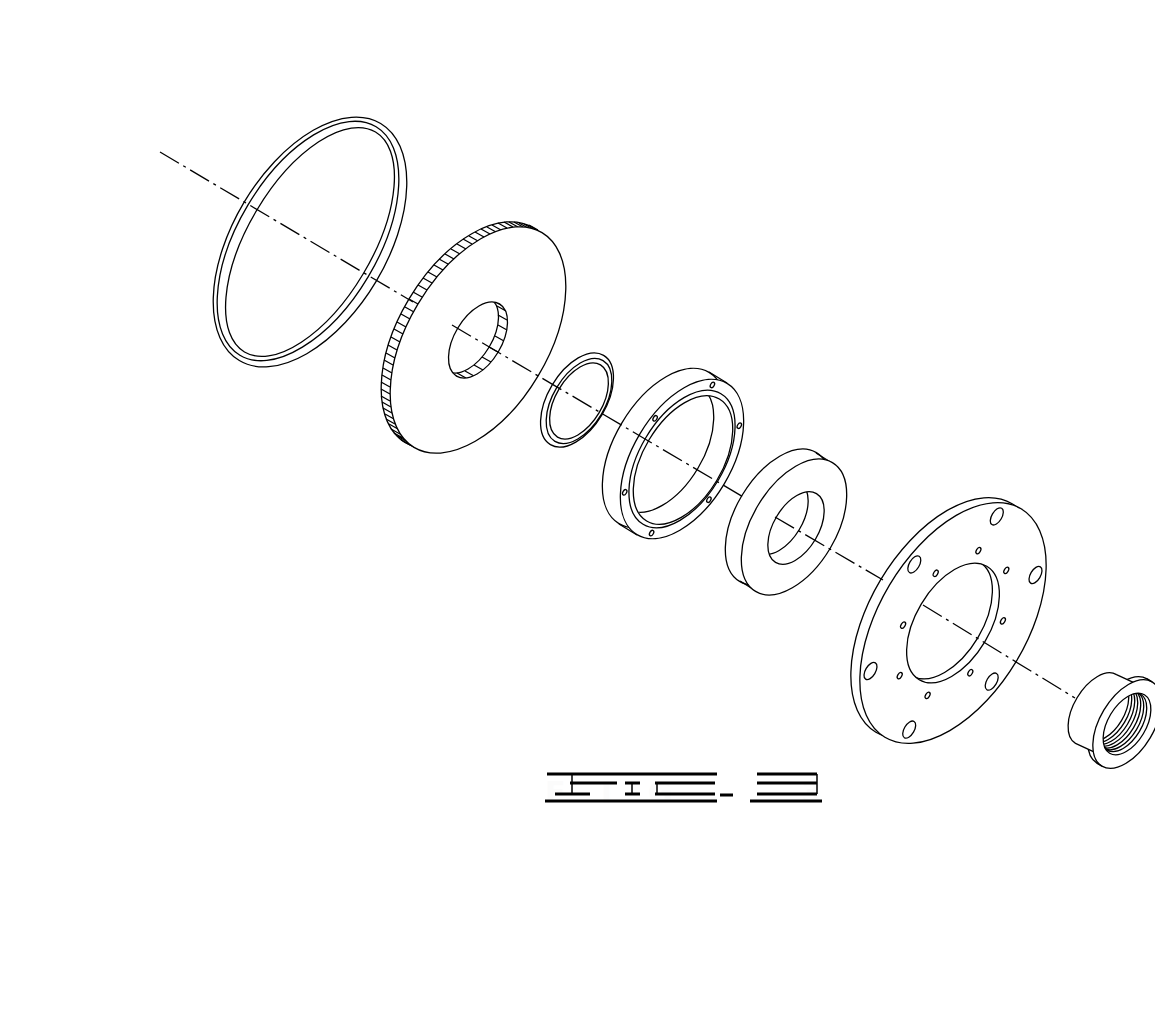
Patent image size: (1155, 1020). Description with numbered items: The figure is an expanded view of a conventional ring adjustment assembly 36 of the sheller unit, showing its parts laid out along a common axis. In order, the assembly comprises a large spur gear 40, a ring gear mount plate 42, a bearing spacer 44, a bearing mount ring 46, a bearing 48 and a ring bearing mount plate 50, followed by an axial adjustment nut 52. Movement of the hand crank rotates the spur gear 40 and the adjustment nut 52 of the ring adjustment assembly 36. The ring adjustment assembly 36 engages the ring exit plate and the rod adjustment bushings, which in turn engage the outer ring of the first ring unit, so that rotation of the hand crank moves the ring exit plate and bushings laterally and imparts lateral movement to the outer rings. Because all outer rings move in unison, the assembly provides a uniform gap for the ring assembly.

The ring adjustment assembly 36 is at (800, 328).
The large spur gear 40 is at (293, 143).
The ring gear mount plate 42 is at (556, 254).
The bearing spacer 44 is at (598, 361).
The bearing mount ring 46 is at (612, 516).
The bearing 48 is at (826, 463).
The ring bearing mount plate 50 is at (1033, 528).
The axial adjustment nut 52 is at (1080, 742).